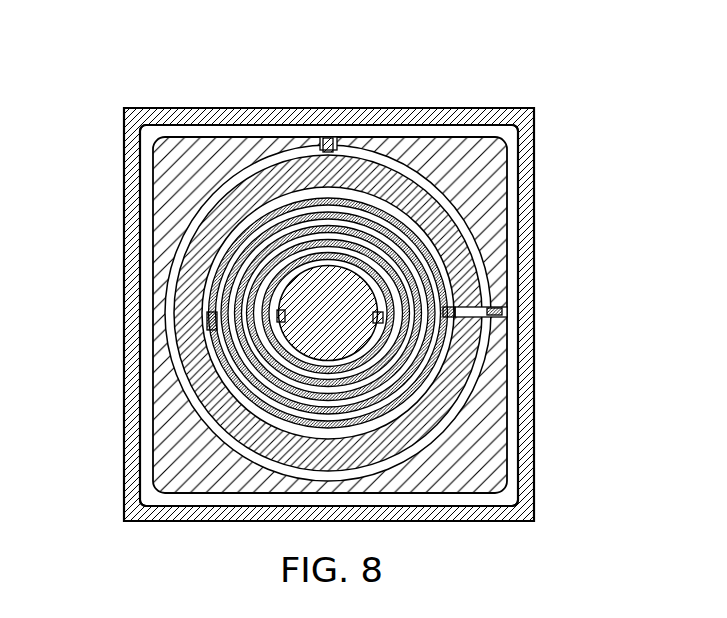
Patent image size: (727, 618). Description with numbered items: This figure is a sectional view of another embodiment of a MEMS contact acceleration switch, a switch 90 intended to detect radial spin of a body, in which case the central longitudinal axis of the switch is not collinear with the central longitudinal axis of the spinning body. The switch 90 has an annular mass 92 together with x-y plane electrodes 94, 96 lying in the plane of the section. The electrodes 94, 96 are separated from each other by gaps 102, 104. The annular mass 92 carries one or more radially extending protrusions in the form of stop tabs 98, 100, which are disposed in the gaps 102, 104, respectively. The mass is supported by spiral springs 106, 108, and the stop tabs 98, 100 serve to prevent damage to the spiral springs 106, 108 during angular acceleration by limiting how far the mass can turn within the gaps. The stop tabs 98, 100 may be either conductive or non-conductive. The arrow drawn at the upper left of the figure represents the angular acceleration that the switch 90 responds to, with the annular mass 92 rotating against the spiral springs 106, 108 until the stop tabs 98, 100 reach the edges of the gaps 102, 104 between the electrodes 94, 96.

The switch 90 is at (581, 50).
The annular mass 92 is at (262, 447).
The x-y plane electrode 94 is at (498, 437).
The x-y plane electrode 96 is at (488, 183).
The stop tab 98 is at (327, 140).
The stop tab 100 is at (500, 312).
The gap 102 is at (321, 136).
The gap 104 is at (455, 311).
The spiral spring 106 is at (262, 222).
The spiral spring 108 is at (215, 333).